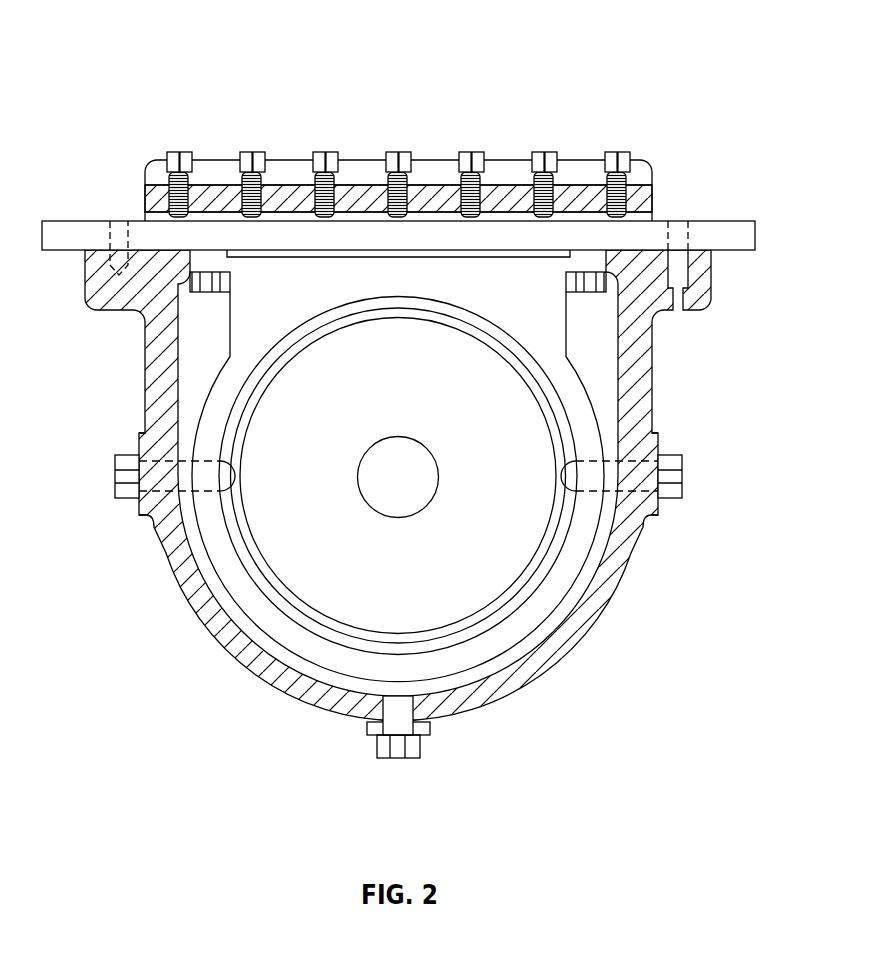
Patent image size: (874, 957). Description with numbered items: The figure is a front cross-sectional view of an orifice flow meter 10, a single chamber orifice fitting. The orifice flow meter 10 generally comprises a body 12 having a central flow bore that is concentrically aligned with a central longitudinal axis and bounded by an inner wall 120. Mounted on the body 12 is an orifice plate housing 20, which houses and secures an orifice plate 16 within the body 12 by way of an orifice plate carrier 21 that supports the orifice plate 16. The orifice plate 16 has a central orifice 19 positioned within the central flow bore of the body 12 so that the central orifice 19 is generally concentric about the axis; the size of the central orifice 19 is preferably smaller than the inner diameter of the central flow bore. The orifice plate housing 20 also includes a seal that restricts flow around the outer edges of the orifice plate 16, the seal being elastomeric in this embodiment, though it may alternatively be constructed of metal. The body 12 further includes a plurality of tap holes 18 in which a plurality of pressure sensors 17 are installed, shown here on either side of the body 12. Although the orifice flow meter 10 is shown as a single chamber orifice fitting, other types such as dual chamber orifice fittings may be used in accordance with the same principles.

The orifice flow meter 10 is at (106, 70).
The body 12 is at (588, 653).
The orifice plate 16 is at (481, 412).
The pressure sensors 17 is at (115, 473).
The tap holes 18 is at (163, 446).
The central orifice 19 is at (373, 448).
The orifice plate housing 20 is at (653, 198).
The orifice plate carrier 21 is at (568, 300).
The inner wall 120 is at (283, 587).